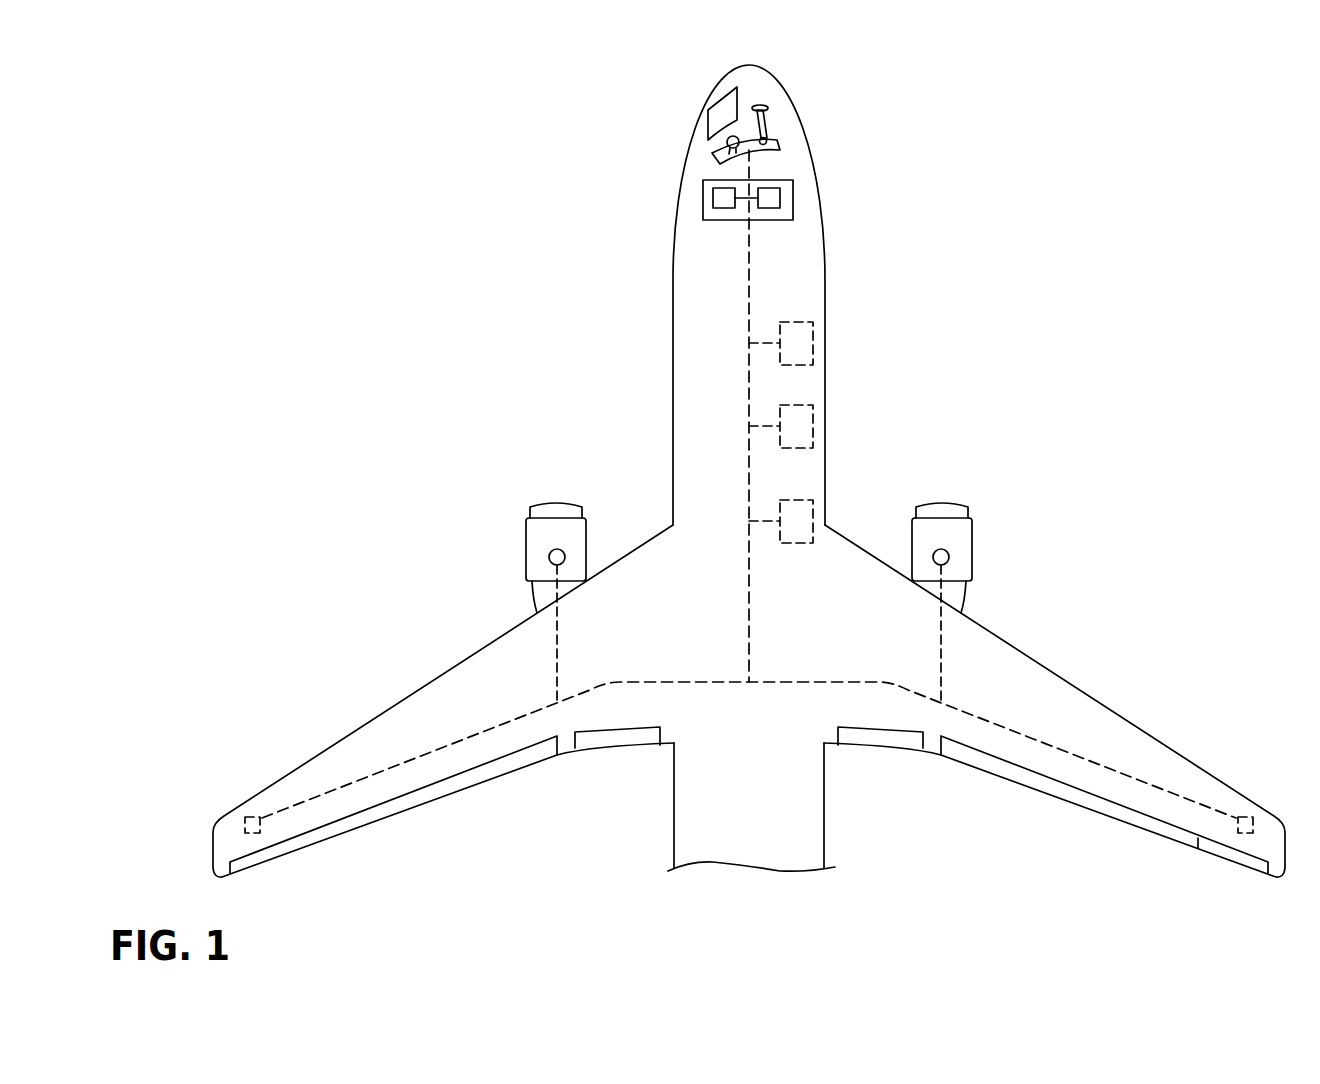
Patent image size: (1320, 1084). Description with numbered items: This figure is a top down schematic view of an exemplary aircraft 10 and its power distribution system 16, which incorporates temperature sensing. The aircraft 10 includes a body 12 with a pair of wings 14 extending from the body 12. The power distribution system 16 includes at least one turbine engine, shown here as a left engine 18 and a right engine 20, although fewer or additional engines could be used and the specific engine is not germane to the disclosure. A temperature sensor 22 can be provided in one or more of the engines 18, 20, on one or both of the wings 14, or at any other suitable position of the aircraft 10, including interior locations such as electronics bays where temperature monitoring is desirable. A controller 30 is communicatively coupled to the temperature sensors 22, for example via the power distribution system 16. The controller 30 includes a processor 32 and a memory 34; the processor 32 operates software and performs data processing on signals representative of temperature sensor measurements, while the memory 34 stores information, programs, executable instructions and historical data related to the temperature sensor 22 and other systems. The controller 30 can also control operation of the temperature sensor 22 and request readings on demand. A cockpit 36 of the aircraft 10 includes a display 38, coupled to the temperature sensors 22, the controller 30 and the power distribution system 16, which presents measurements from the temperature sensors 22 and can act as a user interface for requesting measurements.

The aircraft 10 is at (553, 94).
The body 12 is at (829, 286).
The wings 14 is at (400, 720).
The power distribution system 16 is at (747, 310).
The left engine 18 is at (526, 548).
The right engine 20 is at (973, 540).
The temperature sensor 22 is at (818, 342).
The controller 30 is at (753, 171).
The processor 32 is at (773, 193).
The memory 34 is at (713, 197).
The cockpit 36 is at (777, 116).
The display 38 is at (727, 108).